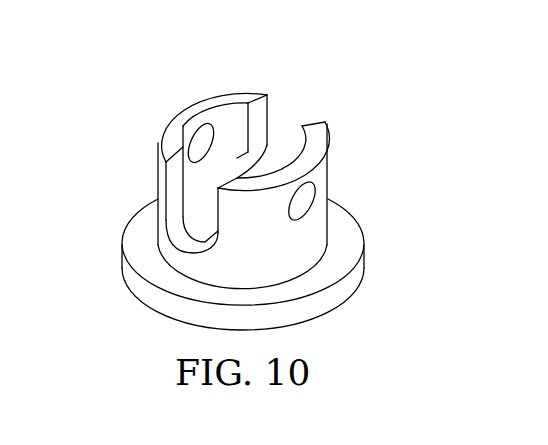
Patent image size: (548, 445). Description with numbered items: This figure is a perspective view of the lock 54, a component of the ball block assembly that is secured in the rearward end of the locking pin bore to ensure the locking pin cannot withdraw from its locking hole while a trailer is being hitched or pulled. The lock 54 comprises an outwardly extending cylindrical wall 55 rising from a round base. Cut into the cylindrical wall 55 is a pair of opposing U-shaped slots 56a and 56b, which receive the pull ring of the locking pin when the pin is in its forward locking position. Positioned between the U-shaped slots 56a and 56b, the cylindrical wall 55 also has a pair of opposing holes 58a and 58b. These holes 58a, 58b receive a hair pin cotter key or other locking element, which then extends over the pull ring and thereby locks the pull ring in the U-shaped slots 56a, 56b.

The lock 54 is at (123, 80).
The outwardly extending cylindrical wall 55 is at (327, 162).
The U-shaped slot 56a is at (262, 120).
The U-shaped slot 56b is at (178, 208).
The hole 58a is at (201, 134).
The hole 58b is at (303, 203).